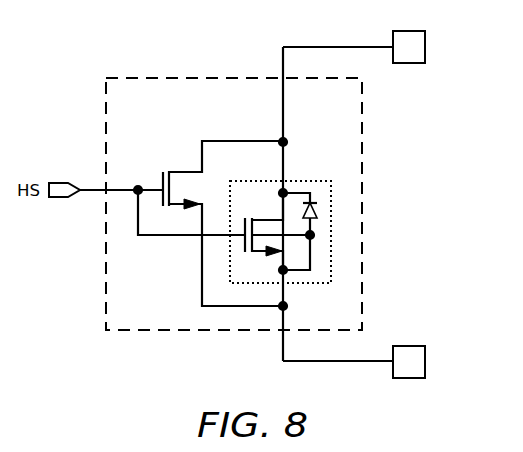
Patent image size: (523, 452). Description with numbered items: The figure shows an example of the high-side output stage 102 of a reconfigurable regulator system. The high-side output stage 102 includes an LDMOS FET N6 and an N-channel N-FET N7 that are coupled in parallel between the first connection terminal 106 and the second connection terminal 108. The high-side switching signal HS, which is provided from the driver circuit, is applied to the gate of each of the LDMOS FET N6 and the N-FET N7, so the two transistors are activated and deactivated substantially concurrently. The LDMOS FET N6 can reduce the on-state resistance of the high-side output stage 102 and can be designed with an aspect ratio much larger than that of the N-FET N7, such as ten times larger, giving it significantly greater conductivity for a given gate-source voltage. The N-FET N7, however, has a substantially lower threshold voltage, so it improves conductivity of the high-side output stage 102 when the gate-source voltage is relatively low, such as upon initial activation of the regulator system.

The high-side output stage 102 is at (118, 77).
The first connection terminal 106 is at (425, 42).
The second connection terminal 108 is at (425, 357).
The N-channel N-FET N7 is at (223, 223).
The LDMOS FET N6 is at (280, 232).